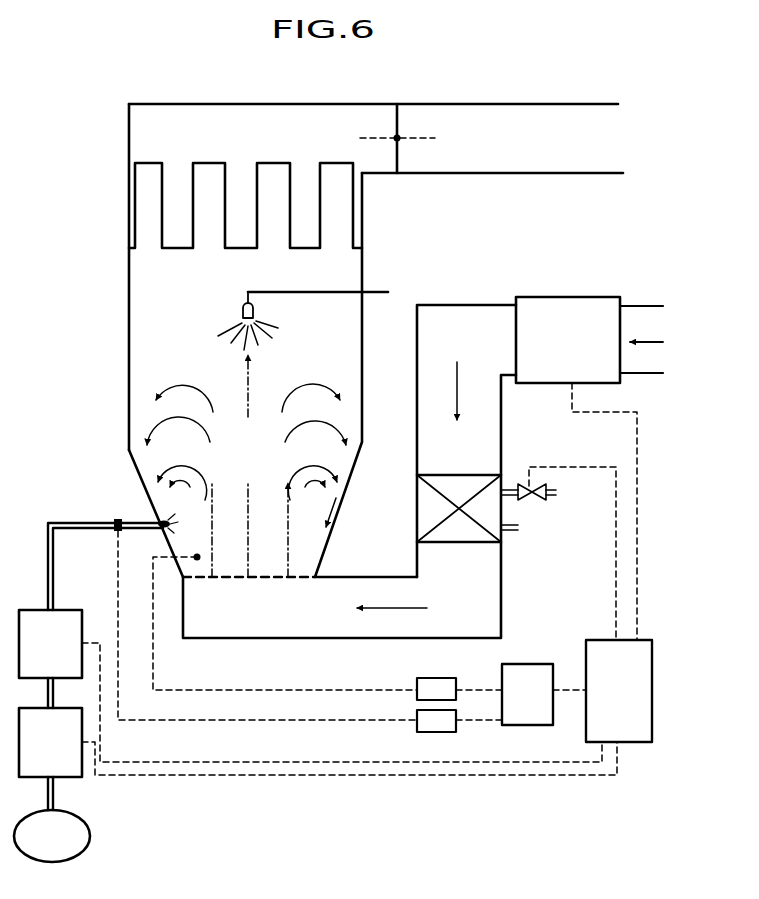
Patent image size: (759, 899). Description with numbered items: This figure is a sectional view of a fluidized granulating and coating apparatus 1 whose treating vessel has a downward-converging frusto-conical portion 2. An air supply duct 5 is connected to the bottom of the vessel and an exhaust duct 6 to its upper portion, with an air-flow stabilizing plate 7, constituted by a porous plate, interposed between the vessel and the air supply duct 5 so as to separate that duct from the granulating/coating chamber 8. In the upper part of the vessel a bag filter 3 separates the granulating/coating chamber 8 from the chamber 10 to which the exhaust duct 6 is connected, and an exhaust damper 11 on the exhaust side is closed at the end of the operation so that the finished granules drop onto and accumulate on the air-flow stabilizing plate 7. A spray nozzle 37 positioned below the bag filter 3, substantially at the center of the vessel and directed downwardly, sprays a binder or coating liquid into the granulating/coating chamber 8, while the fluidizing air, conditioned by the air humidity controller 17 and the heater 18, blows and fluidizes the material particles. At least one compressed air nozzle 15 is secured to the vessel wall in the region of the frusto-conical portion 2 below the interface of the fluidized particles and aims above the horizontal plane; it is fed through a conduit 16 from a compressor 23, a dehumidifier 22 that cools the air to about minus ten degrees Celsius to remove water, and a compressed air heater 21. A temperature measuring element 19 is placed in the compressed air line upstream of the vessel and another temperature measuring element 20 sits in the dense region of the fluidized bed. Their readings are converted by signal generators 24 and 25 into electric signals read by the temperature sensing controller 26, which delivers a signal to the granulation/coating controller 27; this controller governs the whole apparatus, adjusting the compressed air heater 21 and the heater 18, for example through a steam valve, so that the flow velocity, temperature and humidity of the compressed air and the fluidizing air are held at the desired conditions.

The fluidized granulating and coating apparatus 1 is at (123, 293).
The frusto-conical portion 2 is at (358, 462).
The filter 3 is at (362, 226).
The air supply duct 5 is at (347, 632).
The exhaust duct 6 is at (475, 118).
The air-flow stabilizing plate 7 is at (260, 580).
The granulating/coating chamber 8 is at (278, 380).
The chamber 10 is at (250, 118).
The exhaust damper 11 is at (397, 118).
The compressed air nozzle 15 is at (160, 520).
The conduit 16 is at (48, 520).
The air humidity controller 17 is at (563, 306).
The heater (cooler) 18 is at (473, 485).
The temperature measuring element 19 is at (116, 521).
The temperature measuring element 20 is at (197, 561).
The compressed air heater (cooler) 21 is at (66, 620).
The dehumidifier (cooler) 22 is at (78, 770).
The compressor 23 is at (84, 842).
The signal generator 24 is at (420, 726).
The signal generator 25 is at (435, 688).
The temperature sensing controller 26 is at (526, 672).
The granulation/coating controller 27 is at (598, 652).
The spray nozzle 37 is at (243, 305).